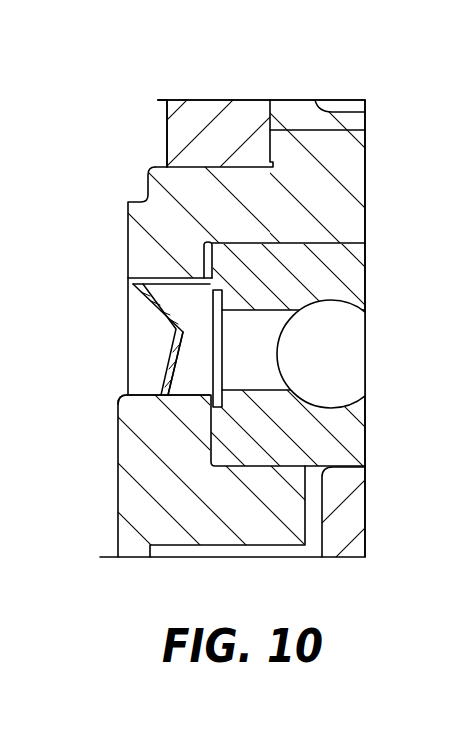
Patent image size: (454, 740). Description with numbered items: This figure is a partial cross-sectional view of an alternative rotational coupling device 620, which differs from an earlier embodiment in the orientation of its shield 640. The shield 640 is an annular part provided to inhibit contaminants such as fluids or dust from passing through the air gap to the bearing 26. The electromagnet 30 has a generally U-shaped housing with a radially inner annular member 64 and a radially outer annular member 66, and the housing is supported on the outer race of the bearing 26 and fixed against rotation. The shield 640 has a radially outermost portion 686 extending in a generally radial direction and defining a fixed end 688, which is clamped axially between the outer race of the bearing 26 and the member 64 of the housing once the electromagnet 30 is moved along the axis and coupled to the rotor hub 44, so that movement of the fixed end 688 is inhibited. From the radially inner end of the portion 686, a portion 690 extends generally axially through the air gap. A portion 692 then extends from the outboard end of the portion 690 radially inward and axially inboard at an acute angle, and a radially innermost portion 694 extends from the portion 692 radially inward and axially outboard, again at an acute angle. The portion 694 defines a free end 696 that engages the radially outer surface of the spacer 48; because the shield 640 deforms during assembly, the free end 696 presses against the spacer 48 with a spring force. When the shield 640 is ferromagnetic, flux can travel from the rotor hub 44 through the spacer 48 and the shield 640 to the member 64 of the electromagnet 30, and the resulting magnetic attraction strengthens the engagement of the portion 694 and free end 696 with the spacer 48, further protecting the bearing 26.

The rotational coupling device 620 is at (118, 107).
The electromagnet 30 is at (284, 82).
The radially outer annular member 66 is at (220, 115).
The radially inner annular member 64 is at (358, 148).
The radially outermost portion 686 is at (203, 257).
The fixed end 688 is at (228, 231).
The axially extending portion 690 is at (180, 283).
The radially inward and axially inboard extending portion 692 is at (162, 311).
The radially innermost portion 694 is at (165, 366).
The free end 696 is at (143, 391).
The shield 640 is at (192, 312).
The bearing 26 is at (357, 372).
The rotor hub 44 is at (357, 510).
The spacer 48 is at (277, 533).